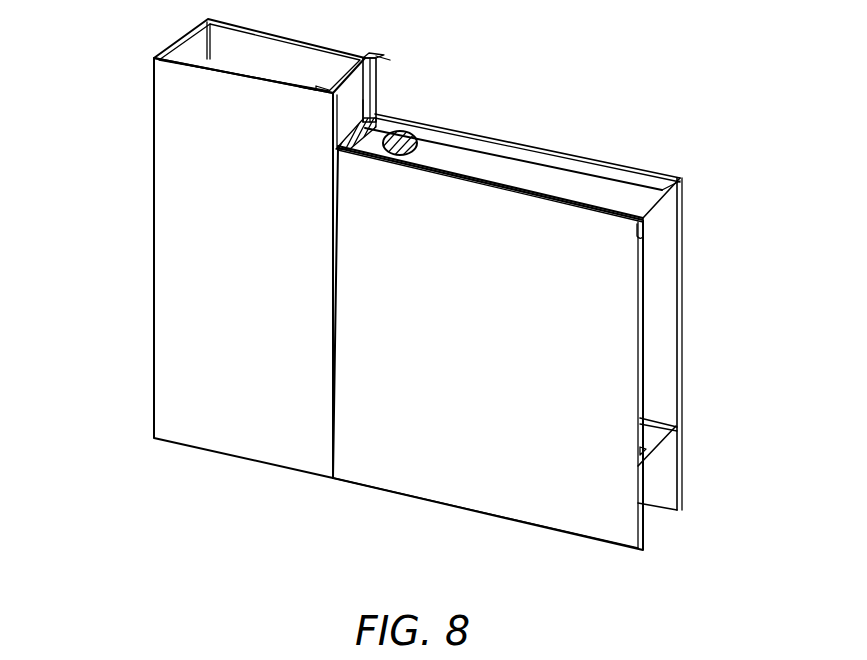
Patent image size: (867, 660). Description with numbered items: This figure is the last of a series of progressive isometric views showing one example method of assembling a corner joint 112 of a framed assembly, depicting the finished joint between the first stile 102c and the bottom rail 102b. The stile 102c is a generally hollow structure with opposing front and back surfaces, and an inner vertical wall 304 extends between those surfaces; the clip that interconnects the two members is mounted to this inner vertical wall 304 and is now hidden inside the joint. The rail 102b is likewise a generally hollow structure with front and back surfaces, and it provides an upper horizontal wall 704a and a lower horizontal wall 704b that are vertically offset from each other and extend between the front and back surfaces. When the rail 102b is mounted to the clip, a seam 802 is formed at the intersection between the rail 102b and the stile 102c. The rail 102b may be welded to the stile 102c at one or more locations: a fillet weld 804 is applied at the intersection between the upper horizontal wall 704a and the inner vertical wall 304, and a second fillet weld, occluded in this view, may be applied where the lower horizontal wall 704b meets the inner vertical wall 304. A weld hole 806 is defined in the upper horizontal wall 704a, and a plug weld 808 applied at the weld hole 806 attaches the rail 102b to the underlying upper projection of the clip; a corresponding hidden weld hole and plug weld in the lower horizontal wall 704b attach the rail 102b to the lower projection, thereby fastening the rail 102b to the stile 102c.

The corner joint 112 is at (537, 57).
The bottom rail 102b is at (628, 275).
The first stile 102c is at (150, 173).
The inner vertical wall 304 is at (366, 90).
The upper horizontal wall 704a is at (632, 193).
The lower horizontal wall 704b is at (670, 426).
The seam 802 is at (327, 440).
The fillet weld 804 is at (364, 111).
The weld hole 806 is at (407, 137).
The plug weld 808 is at (414, 141).